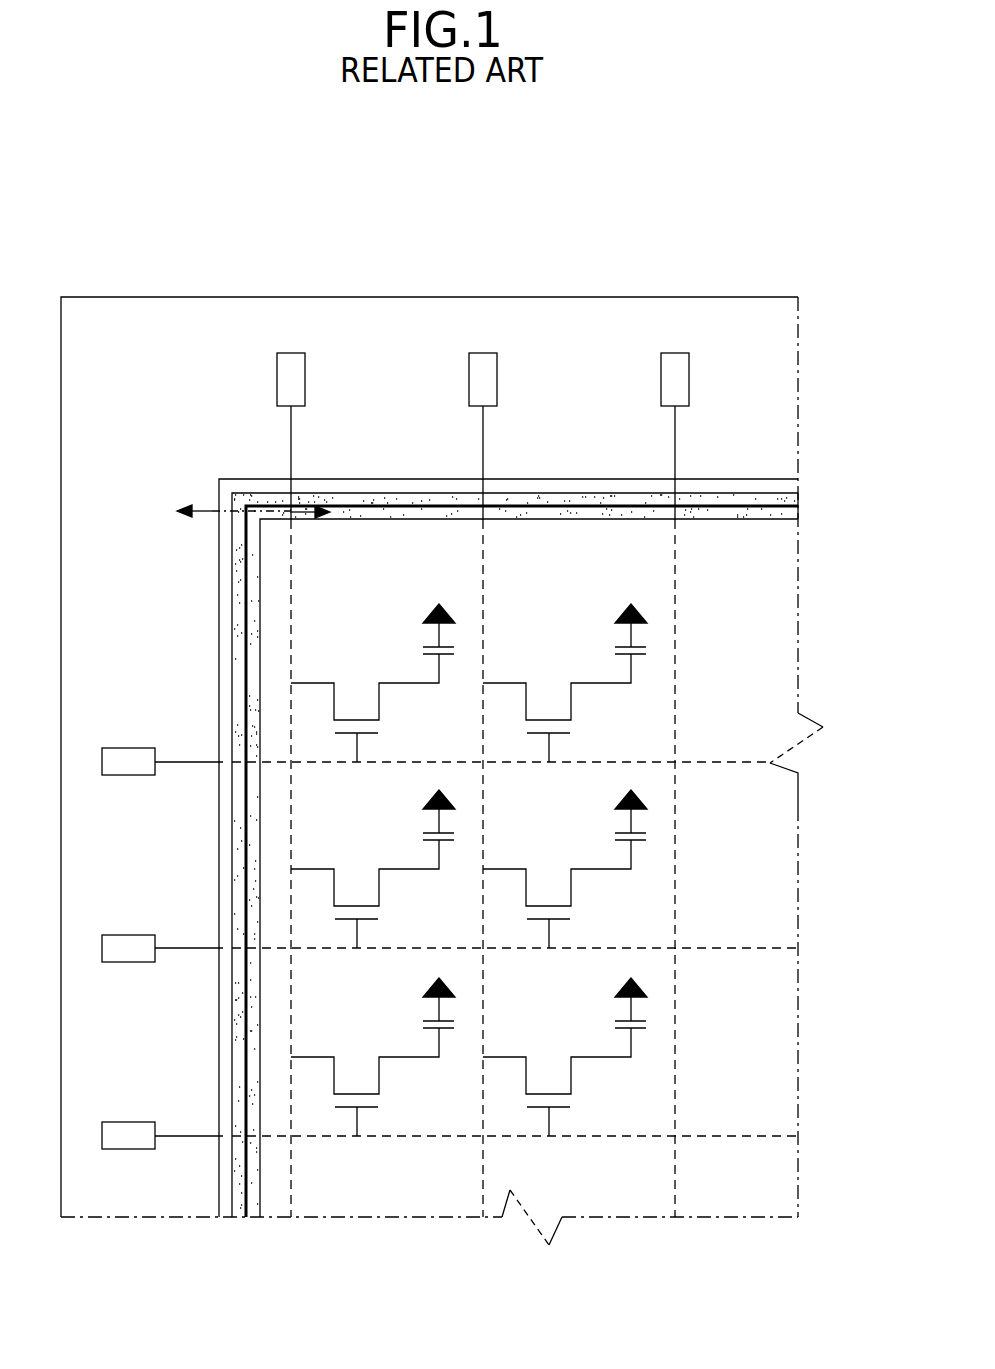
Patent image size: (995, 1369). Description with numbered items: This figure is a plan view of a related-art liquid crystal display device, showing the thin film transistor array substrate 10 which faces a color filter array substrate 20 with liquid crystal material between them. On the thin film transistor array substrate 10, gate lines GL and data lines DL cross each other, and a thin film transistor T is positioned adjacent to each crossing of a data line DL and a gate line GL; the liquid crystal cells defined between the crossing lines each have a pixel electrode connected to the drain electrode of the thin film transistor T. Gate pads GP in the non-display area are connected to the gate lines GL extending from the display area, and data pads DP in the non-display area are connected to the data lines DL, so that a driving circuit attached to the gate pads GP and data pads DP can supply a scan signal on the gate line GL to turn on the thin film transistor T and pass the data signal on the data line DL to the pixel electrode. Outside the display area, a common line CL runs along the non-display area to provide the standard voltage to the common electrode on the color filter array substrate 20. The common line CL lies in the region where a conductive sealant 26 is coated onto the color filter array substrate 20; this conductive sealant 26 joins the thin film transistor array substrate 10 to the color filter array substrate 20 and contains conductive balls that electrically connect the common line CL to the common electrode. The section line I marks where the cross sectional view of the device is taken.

The thin film transistor array substrate 10 is at (798, 365).
The color filter array substrate 20 is at (800, 486).
The conductive sealant 26 is at (800, 512).
The data pad DP is at (305, 382).
The gate pad GP is at (128, 775).
The data line DL is at (291, 637).
The gate line GL is at (341, 762).
The common line CL is at (508, 506).
The thin film transistor T is at (373, 683).
The section line I-I' I is at (253, 527).